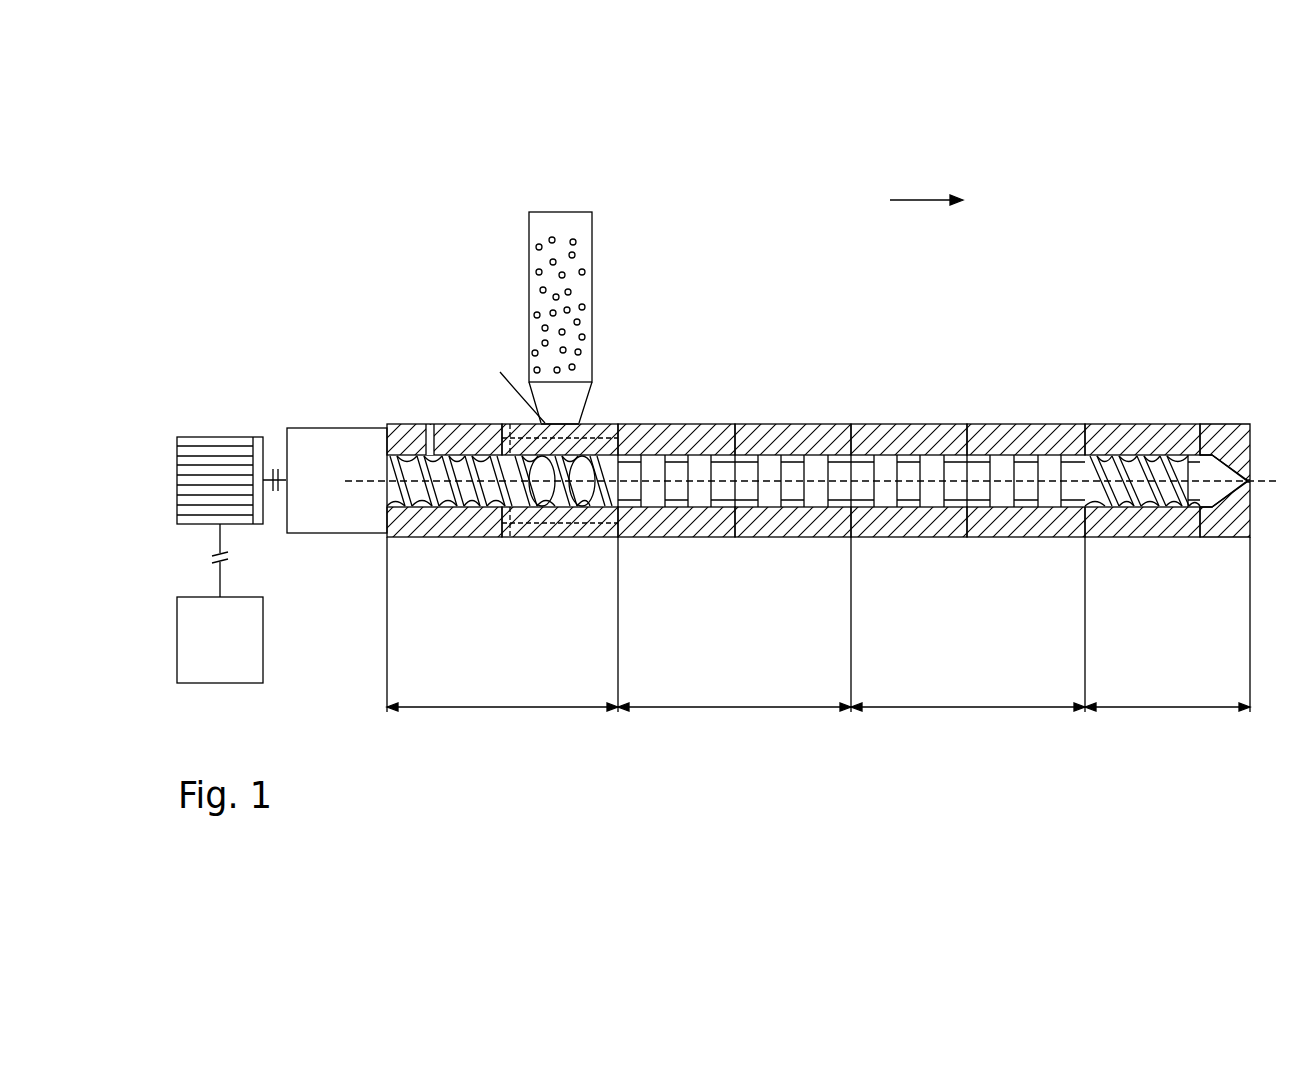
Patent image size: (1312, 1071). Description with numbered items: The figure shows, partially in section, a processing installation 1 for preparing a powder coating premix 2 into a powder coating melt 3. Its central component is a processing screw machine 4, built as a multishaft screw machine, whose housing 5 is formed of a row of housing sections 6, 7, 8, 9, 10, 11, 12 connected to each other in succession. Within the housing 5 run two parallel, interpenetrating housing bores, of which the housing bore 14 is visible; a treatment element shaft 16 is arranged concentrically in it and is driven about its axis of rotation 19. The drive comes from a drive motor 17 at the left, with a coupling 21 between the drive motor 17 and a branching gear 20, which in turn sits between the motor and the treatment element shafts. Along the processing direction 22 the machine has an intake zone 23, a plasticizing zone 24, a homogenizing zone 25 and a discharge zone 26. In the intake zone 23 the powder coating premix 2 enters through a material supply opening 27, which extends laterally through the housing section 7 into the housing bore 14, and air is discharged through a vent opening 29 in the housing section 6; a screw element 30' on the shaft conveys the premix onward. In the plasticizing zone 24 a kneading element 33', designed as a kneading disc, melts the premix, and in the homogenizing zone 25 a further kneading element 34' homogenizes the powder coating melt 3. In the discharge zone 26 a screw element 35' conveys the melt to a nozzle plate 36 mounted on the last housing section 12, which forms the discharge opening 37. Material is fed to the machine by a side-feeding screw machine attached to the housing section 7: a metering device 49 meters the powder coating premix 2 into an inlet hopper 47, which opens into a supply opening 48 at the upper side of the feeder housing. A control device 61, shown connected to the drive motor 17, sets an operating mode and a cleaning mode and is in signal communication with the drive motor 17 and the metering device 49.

The processing installation 1 is at (823, 165).
The powder coating premix 2 is at (550, 222).
The powder coating melt 3 is at (773, 507).
The processing screw machine 4 is at (427, 547).
The housing 5 is at (713, 414).
The housing section 6 is at (458, 525).
The housing section 7 is at (575, 512).
The housing section 8 is at (688, 535).
The housing section 9 is at (797, 424).
The housing section 10 is at (905, 424).
The housing section 11 is at (1003, 424).
The housing section 12 is at (1163, 430).
The housing bore 14 is at (1132, 452).
The treatment element shaft 16 is at (1093, 453).
The drive motor 17 is at (218, 437).
The axis of rotation 19 is at (1090, 512).
The branching gear 20 is at (337, 533).
The coupling 21 is at (275, 470).
The processing direction 22 is at (925, 200).
The intake zone 23 is at (502, 624).
The plasticizing zone 24 is at (734, 624).
The homogenizing zone 25 is at (968, 624).
The discharge zone 26 is at (1167, 624).
The material supply opening 27 is at (588, 422).
The vent opening 29 is at (429, 452).
The screw element 30' is at (563, 557).
The kneading element 33' is at (793, 556).
The kneading element 34' is at (1026, 556).
The screw element 35' is at (1151, 557).
The nozzle plate 36 is at (1230, 537).
The discharge opening 37 is at (1247, 481).
The inlet hopper 47 is at (580, 397).
The supply opening 48 is at (500, 372).
The metering device 49 is at (579, 212).
The control device 61 is at (227, 683).